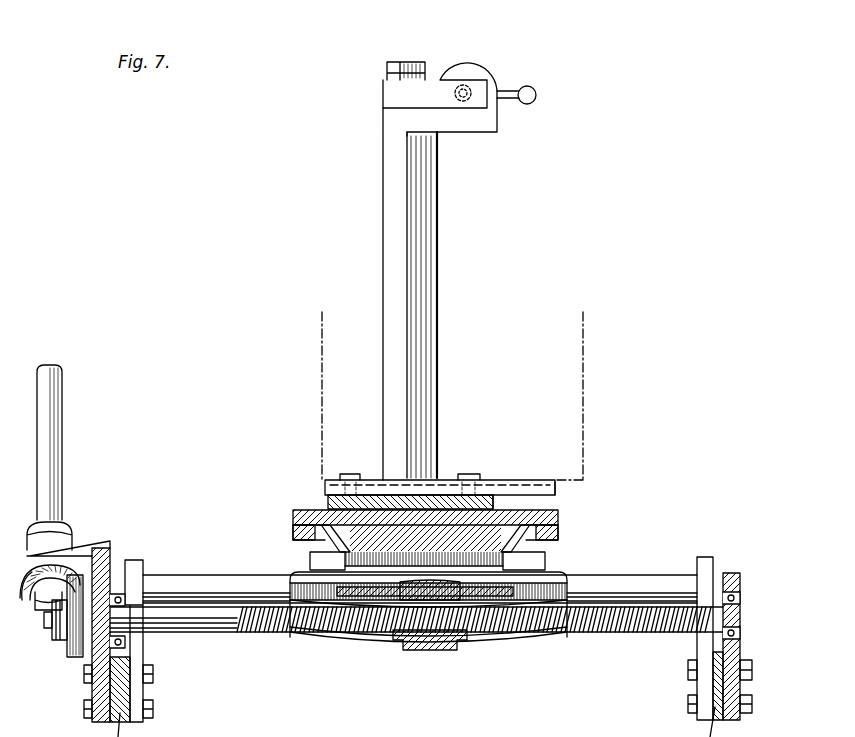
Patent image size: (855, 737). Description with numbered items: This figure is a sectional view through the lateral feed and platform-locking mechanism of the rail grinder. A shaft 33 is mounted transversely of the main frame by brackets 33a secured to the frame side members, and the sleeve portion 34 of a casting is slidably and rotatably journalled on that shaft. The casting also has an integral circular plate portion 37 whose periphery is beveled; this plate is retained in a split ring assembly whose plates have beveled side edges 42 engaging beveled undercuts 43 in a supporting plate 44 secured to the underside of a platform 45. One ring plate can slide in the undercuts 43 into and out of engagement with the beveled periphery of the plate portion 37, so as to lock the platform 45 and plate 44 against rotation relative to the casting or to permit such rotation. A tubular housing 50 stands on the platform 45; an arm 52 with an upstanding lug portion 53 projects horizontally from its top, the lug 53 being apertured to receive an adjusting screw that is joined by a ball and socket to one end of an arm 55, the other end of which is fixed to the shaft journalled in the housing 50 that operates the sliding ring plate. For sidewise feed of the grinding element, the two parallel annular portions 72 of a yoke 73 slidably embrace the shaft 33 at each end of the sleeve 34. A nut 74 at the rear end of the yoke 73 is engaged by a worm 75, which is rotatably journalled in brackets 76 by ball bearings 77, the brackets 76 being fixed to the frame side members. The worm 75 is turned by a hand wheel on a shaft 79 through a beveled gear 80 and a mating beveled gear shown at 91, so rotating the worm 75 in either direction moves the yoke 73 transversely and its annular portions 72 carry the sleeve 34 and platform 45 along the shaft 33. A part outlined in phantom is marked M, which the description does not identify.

The machine body (phantom) M is at (583, 367).
The shaft 33 is at (643, 583).
The brackets 33a is at (140, 560).
The sleeve portion 34 is at (327, 565).
The circular plate portion 37 is at (533, 513).
The beveled side edges 42 is at (300, 536).
The beveled undercuts 43 is at (323, 508).
The supporting plate 44 is at (293, 516).
The platform 45 is at (327, 505).
The tubular housing 50 is at (428, 267).
The arm 52 is at (458, 120).
The lug portion 53 is at (487, 72).
The arm 55 is at (432, 97).
The annular portions 72 is at (300, 563).
The yoke 73 is at (493, 638).
The nut 74 is at (410, 650).
The worm 75 is at (332, 622).
The brackets 76 is at (113, 585).
The ball bearings 77 is at (122, 642).
The shaft 79 is at (52, 418).
The beveled gear 80 is at (72, 640).
The bevel pinion 91 is at (30, 600).